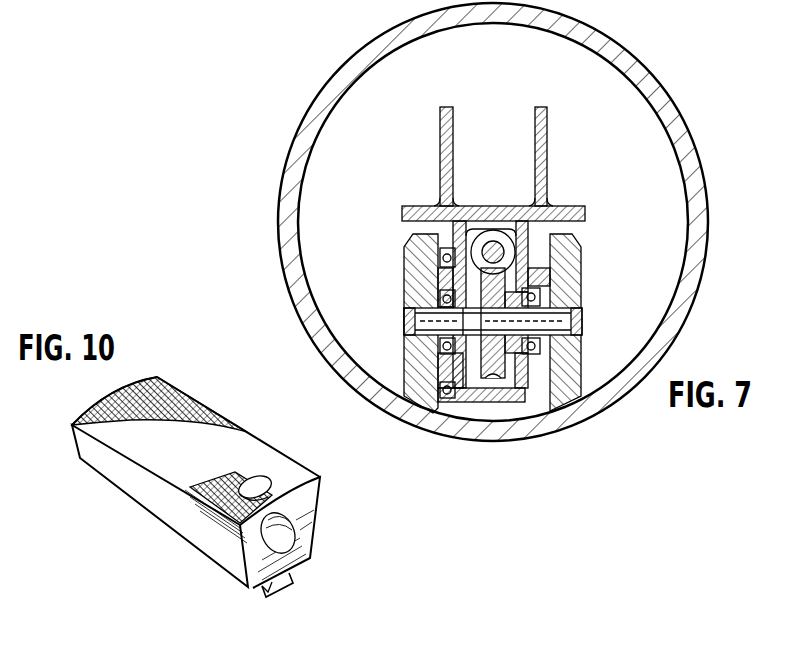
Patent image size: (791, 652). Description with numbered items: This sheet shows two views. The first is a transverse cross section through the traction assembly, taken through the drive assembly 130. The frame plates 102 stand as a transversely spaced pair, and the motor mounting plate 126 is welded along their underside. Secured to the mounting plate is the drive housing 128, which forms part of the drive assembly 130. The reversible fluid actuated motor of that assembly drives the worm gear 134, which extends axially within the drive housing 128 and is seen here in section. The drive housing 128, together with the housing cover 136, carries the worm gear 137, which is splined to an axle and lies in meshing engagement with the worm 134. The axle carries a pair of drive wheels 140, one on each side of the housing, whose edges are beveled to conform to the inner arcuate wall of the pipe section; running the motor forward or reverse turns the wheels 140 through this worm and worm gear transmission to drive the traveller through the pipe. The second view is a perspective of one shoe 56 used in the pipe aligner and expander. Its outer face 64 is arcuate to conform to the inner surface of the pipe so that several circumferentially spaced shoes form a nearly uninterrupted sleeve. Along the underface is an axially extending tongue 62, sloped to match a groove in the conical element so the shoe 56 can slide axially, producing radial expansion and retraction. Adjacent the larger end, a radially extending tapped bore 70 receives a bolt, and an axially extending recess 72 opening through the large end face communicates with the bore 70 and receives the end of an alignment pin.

In FIG. 7, the frame plates 102 is at (534, 116).
In FIG. 7, the motor mounting plate 126 is at (487, 204).
In FIG. 7, the drive housing 128 is at (532, 240).
In FIG. 7, the drive assembly 130 is at (601, 426).
In FIG. 7, the worm gear 134 is at (483, 250).
In FIG. 7, the housing cover 136 is at (440, 363).
In FIG. 7, the worm gear 137 is at (527, 282).
In FIG. 7, the drive wheels 140 is at (412, 268).
In FIG. 10, the shoe 56 is at (308, 495).
In FIG. 10, the tongue 62 is at (290, 578).
In FIG. 10, the outer face 64 is at (197, 417).
In FIG. 10, the tapped bore 70 is at (257, 483).
In FIG. 10, the recess 72 is at (292, 528).